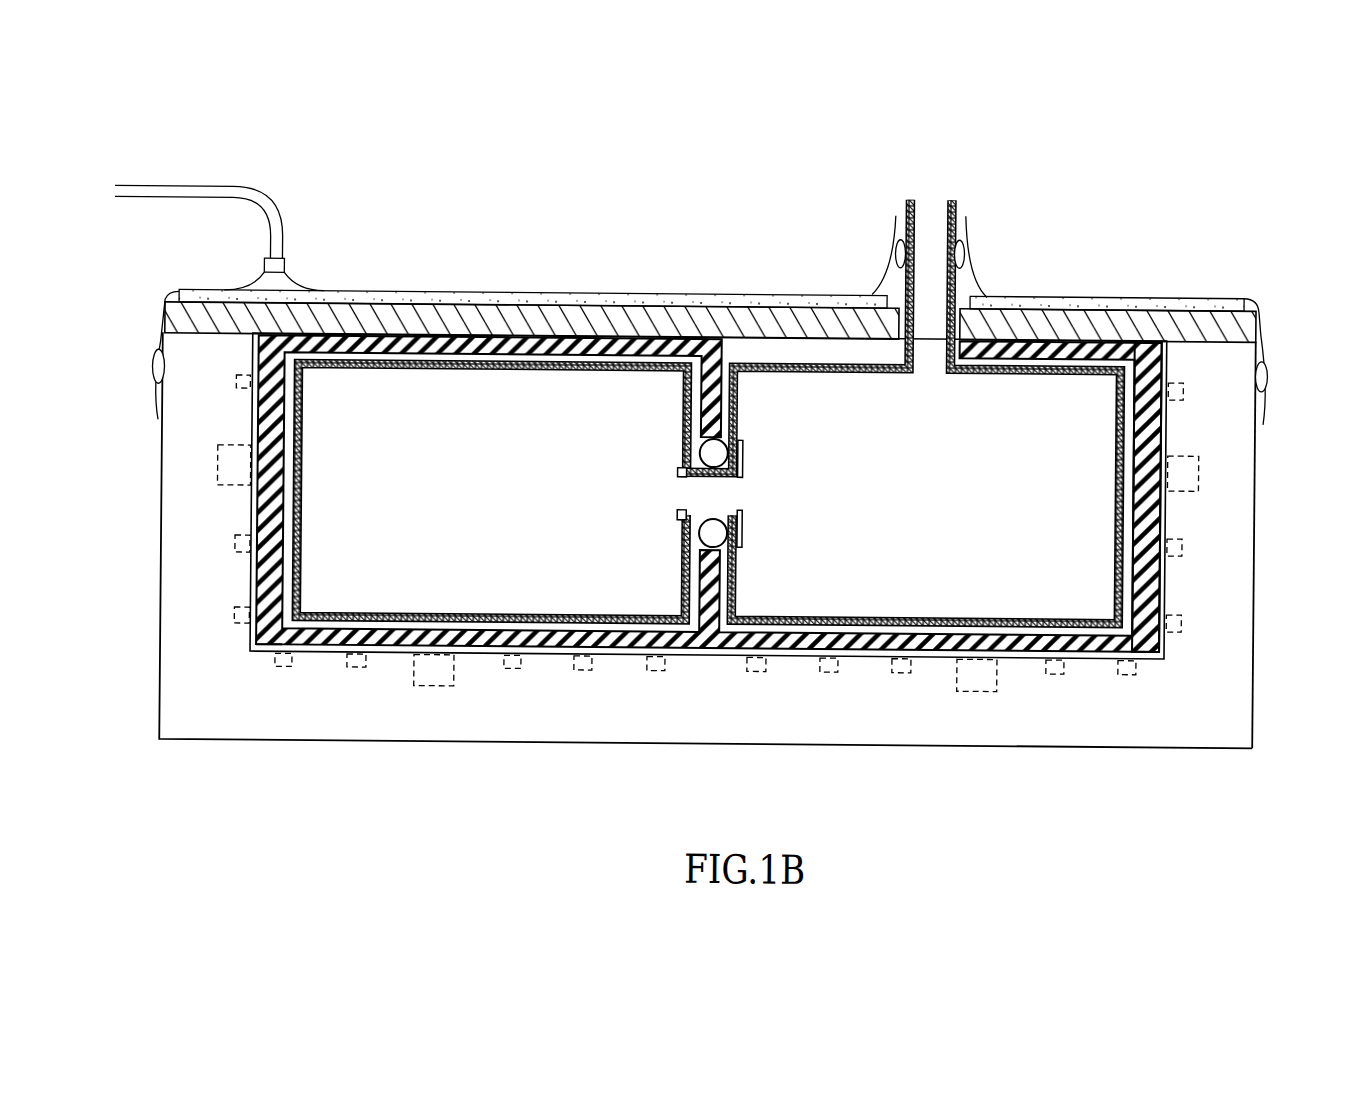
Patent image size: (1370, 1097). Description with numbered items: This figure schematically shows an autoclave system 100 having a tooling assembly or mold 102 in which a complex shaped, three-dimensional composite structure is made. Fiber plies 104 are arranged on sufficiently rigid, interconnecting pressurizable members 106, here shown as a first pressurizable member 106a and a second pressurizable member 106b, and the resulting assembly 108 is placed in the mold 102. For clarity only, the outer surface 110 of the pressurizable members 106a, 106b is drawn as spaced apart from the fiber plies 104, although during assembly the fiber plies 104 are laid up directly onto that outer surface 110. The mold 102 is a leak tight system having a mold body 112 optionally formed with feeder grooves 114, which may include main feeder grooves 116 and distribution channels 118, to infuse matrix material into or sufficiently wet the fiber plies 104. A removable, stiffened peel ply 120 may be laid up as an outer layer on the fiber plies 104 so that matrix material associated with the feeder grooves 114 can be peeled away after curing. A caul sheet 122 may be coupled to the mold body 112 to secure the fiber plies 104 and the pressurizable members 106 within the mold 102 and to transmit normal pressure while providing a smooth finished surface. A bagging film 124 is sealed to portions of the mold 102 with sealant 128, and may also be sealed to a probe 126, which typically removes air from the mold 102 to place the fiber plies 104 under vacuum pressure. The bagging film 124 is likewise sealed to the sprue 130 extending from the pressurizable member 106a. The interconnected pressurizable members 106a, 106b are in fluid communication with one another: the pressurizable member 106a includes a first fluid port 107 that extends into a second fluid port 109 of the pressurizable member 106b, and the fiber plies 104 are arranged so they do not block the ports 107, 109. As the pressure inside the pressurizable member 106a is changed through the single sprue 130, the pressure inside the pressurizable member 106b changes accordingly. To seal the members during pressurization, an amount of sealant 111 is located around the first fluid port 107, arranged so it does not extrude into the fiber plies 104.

The autoclave system 100 is at (1205, 143).
The mold 102 is at (1279, 717).
The fiber plies 104 is at (1160, 634).
The pressurizable members 106 is at (745, 493).
The pressurizable member 106a is at (1023, 372).
The pressurizable member 106b is at (562, 376).
The first fluid port 107 is at (720, 479).
The assembly 108 is at (1014, 652).
The second fluid port 109 is at (685, 496).
The outer surface 110 is at (1127, 418).
The sealant 111 is at (700, 455).
The mold body 112 is at (1258, 572).
The feeder grooves 114 is at (585, 671).
The main feeder grooves 116 is at (442, 672).
The distribution channels 118 is at (358, 666).
The stiffened peel ply 120 is at (275, 651).
The caul sheet 122 is at (1262, 323).
The bagging film 124 is at (1253, 295).
The probe 126 is at (182, 190).
The sealant 128 is at (151, 410).
The sprue 130 is at (955, 203).